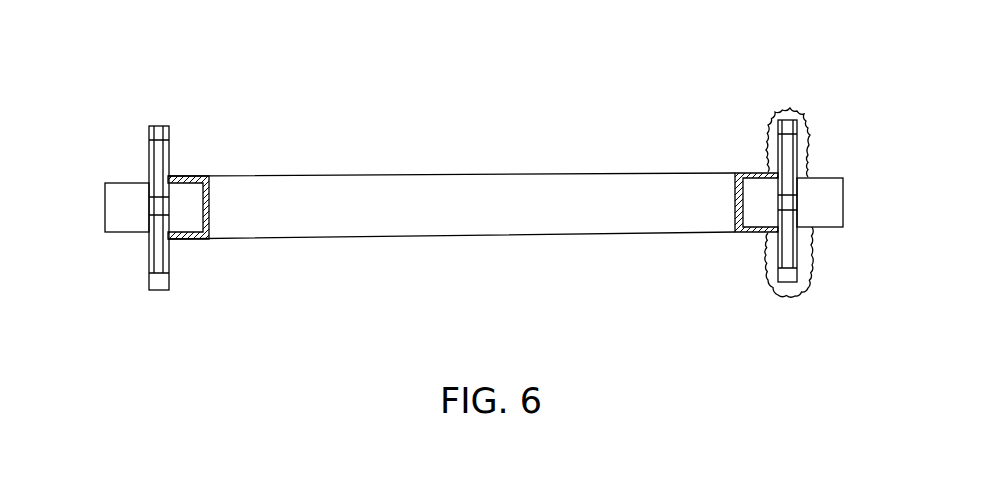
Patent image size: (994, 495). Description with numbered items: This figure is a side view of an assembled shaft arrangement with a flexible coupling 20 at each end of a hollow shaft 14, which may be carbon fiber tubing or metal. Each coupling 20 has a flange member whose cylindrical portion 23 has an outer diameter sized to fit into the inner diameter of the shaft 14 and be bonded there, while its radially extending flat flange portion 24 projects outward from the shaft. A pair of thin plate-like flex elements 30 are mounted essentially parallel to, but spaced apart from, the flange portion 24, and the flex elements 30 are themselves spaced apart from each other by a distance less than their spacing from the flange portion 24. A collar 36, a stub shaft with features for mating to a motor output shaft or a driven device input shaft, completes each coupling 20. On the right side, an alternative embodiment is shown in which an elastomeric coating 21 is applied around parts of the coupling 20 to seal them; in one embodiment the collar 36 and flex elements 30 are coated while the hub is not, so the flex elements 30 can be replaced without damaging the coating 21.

The shaft 14 is at (492, 143).
The coupling 20 is at (473, 185).
The elastomeric coating 21 is at (802, 117).
The cylindrical portion 23 is at (193, 240).
The flange portion 24 is at (170, 273).
The flex element 30 is at (148, 260).
The collar 36 is at (122, 210).